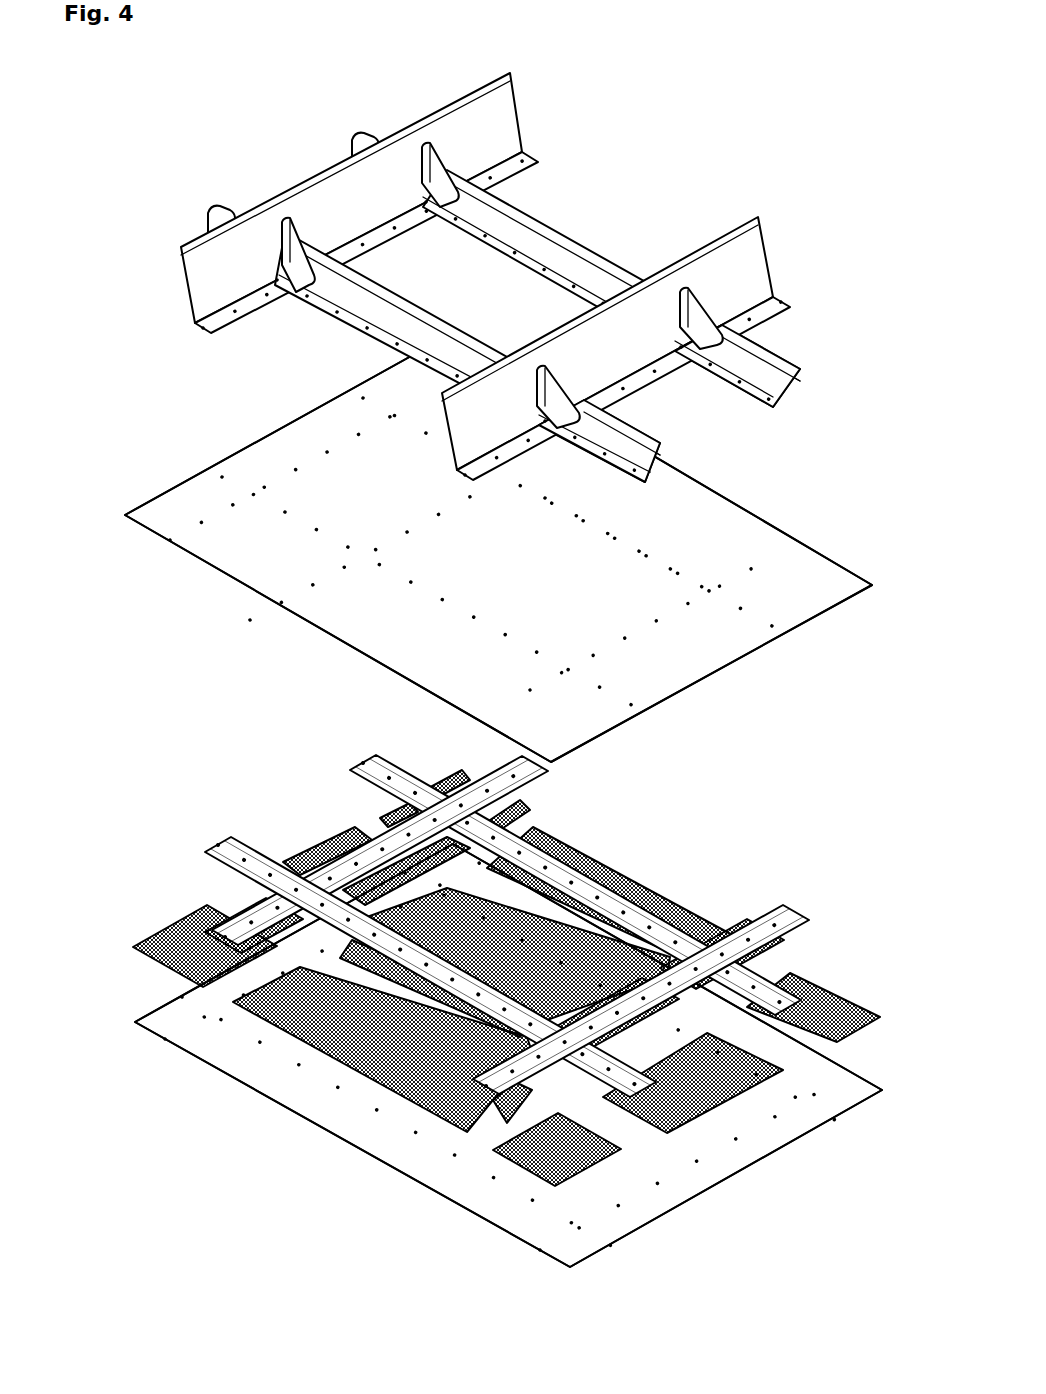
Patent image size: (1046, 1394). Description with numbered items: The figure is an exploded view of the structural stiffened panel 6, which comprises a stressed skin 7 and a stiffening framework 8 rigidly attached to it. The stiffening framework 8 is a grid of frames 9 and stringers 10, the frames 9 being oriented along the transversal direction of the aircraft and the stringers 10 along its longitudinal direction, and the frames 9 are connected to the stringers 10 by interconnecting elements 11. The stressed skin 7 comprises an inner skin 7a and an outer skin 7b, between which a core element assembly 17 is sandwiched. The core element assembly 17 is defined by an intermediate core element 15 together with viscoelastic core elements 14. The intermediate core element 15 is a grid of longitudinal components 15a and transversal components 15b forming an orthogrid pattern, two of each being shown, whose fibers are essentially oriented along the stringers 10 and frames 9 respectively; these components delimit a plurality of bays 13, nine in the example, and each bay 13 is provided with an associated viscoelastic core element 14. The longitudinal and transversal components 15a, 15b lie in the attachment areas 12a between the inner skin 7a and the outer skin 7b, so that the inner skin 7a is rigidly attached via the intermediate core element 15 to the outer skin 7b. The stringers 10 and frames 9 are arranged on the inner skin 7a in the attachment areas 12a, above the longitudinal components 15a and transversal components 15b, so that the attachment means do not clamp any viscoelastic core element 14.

The structural stiffened panel 6 is at (722, 102).
The stressed skin 7 is at (56, 1035).
The inner skin 7a is at (803, 583).
The outer skin 7b is at (592, 1230).
The stiffening framework 8 is at (389, 80).
The frames 9 is at (359, 203).
The stringers 10 is at (523, 212).
The interconnecting elements 11 is at (432, 158).
The attachment areas 12a is at (818, 509).
The bay 13 is at (572, 842).
The viscoelastic core element 14 is at (575, 970).
The intermediate core element 15 is at (382, 740).
The longitudinal components 15a is at (196, 826).
The transversal components 15b is at (822, 903).
The core element assembly 17 is at (110, 765).